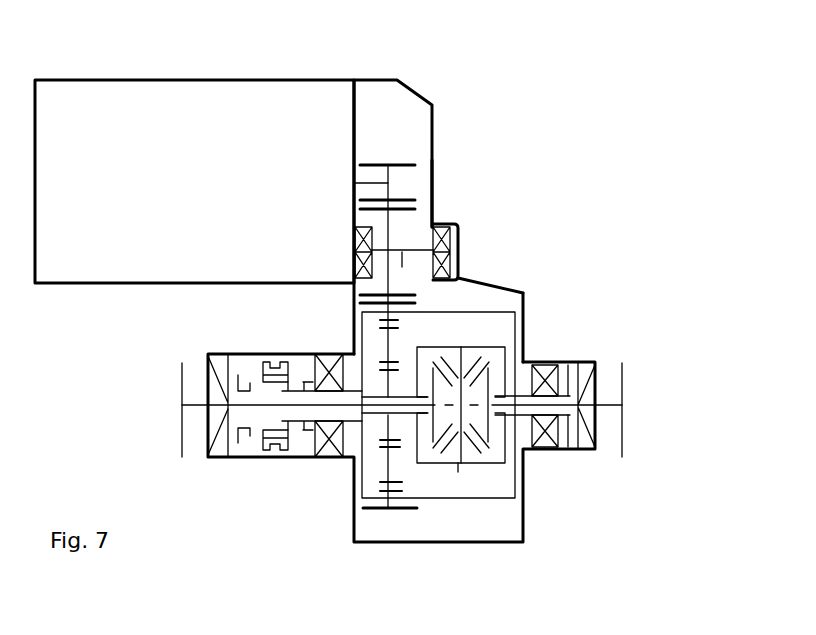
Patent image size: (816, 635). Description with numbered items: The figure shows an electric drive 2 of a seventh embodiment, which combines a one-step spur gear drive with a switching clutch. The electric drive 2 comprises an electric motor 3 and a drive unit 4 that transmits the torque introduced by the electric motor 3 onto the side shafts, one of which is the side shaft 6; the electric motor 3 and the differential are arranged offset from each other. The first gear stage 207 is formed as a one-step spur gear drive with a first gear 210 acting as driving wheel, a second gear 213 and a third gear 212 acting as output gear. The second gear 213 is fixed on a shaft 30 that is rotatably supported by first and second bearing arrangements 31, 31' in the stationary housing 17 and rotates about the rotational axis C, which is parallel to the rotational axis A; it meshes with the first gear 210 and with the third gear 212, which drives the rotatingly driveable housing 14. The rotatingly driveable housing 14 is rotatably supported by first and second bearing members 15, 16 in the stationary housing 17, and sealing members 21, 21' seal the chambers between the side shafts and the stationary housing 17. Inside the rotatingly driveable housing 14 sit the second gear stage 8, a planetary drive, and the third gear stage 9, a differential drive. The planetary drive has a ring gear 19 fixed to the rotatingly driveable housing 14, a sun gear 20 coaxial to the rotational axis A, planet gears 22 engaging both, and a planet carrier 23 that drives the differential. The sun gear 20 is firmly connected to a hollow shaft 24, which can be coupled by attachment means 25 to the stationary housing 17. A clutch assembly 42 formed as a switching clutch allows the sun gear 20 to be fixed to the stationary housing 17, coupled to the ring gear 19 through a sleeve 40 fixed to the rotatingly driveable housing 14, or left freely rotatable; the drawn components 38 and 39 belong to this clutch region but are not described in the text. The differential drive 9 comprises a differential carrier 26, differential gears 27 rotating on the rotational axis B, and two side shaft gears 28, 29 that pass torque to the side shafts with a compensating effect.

The electric drive 2 is at (562, 128).
The electric motor 3 is at (196, 188).
The drive unit 4 is at (430, 88).
The side shaft 6 is at (226, 405).
The second gear stage 8 is at (402, 503).
The third gear stage 9 is at (502, 477).
The rotatingly driveable housing 14 is at (509, 306).
The first bearing member 15 is at (560, 362).
The second bearing member 16 is at (327, 462).
The stationary housing 17 is at (436, 174).
The ring gear 19 is at (398, 322).
The sun gear 20 is at (356, 460).
The sealing member 21 is at (603, 384).
The sealing member 21' is at (218, 456).
The planet gears 22 is at (401, 330).
The planet carrier 23 is at (405, 470).
The hollow shaft 24 is at (290, 447).
The attachment means 25 is at (232, 365).
The differential carrier 26 is at (498, 342).
The differential gears 27 is at (476, 452).
The side shaft gear 28 is at (491, 428).
The side shaft gear 29 is at (428, 366).
The shaft 30 is at (411, 248).
The first bearing arrangement 31 is at (470, 252).
The second bearing arrangement 31' is at (341, 252).
The synchronizer 38 is at (268, 362).
The shift sleeve 39 is at (248, 462).
The sleeve 40 is at (318, 354).
The clutch assembly 42 is at (278, 466).
The first gear stage 207 is at (388, 142).
The first gear 210 is at (408, 164).
The third gear 212 is at (440, 284).
The second gear 213 is at (412, 206).
The rotational axis A is at (437, 484).
The rotational axis B is at (460, 478).
The rotational axis C is at (409, 266).